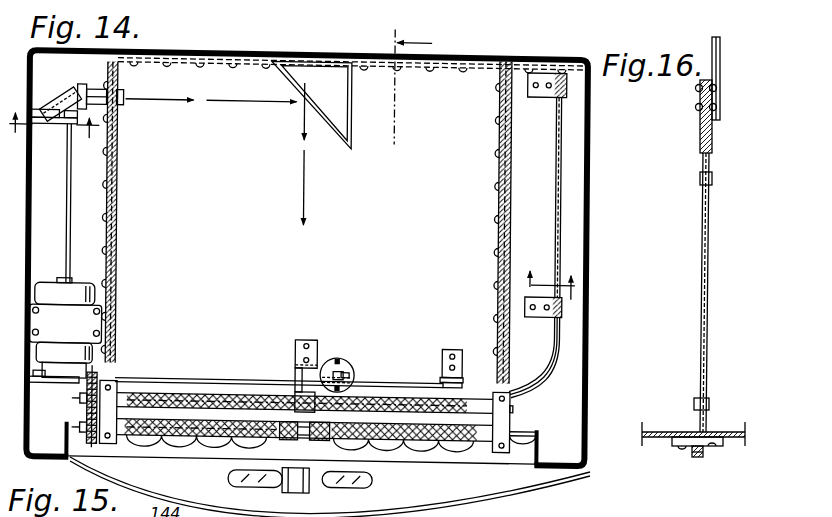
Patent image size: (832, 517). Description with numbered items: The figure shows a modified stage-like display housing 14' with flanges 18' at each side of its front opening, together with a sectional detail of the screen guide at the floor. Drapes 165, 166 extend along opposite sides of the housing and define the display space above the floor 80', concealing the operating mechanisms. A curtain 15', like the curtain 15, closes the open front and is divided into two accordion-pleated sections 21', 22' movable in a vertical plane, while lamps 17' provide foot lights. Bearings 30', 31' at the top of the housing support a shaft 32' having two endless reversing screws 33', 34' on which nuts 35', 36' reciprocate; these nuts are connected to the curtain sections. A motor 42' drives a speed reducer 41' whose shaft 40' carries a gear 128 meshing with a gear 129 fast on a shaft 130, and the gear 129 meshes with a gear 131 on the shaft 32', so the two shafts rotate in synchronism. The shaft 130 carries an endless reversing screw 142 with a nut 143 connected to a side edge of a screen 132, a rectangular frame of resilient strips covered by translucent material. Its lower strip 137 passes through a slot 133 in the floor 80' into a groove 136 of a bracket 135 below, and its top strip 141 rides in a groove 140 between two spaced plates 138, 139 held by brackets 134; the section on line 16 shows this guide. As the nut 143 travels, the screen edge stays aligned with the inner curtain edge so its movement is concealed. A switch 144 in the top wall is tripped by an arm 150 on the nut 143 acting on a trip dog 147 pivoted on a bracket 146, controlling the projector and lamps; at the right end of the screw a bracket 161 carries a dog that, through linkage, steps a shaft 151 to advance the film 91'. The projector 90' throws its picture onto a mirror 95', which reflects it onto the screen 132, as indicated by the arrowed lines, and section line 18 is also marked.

In FIG. 14, the housing 14' is at (327, 258).
In FIG. 14, the flanges 18' is at (300, 443).
In FIG. 14, the drape 165 is at (118, 232).
In FIG. 14, the drape 166 is at (500, 183).
In FIG. 14, the mirror 95' is at (294, 105).
In FIG. 14, the curtain 15 is at (424, 88).
In FIG. 14, the floor 80' is at (360, 244).
In FIG. 16, the floor 80' is at (686, 448).
In FIG. 14, the projector 90' is at (55, 91).
In FIG. 14, the film 91' is at (89, 85).
In FIG. 14, the section line 18 is at (53, 136).
In FIG. 14, the shaft 151 is at (68, 202).
In FIG. 14, the motor 42' is at (65, 310).
In FIG. 14, the speed reducer 41' is at (52, 393).
In FIG. 14, the gear 128 is at (99, 373).
In FIG. 14, the shaft 40' is at (116, 384).
In FIG. 14, the gear 129 is at (88, 404).
In FIG. 14, the gear 131 is at (94, 442).
In FIG. 14, the bearing 31' is at (124, 397).
In FIG. 14, the shaft 130 is at (135, 397).
In FIG. 14, the endless reversing screw 142 is at (406, 391).
In FIG. 14, the endless reversing screw 33' is at (326, 444).
In FIG. 14, the curtain section 22' is at (330, 458).
In FIG. 14, the endless reversing screw 34' is at (201, 455).
In FIG. 14, the nut 36' is at (265, 442).
In FIG. 14, the nut 35' is at (306, 442).
In FIG. 14, the curtain section 21' is at (407, 468).
In FIG. 14, the curtain 15' is at (437, 471).
In FIG. 14, the shaft 32' is at (463, 468).
In FIG. 14, the lamps 17' is at (300, 490).
In FIG. 14, the bracket 146 is at (298, 338).
In FIG. 14, the arm 150 is at (300, 372).
In FIG. 14, the nut 143 is at (302, 395).
In FIG. 14, the switch 144 is at (340, 354).
In FIG. 14, the trip dog 147 is at (355, 362).
In FIG. 14, the bracket 161 is at (455, 342).
In FIG. 14, the bearing 30' is at (523, 422).
In FIG. 14, the brackets 134 is at (542, 88).
In FIG. 16, the brackets 134 is at (720, 62).
In FIG. 14, the groove 140 is at (557, 205).
In FIG. 16, the groove 140 is at (701, 118).
In FIG. 14, the plate 139 is at (556, 173).
In FIG. 16, the plate 139 is at (703, 137).
In FIG. 14, the plate 138 is at (557, 176).
In FIG. 16, the plate 138 is at (712, 128).
In FIG. 14, the screen 132 is at (562, 268).
In FIG. 16, the screen 132 is at (710, 216).
In FIG. 14, the section line 16 is at (549, 291).
In FIG. 16, the top strip 141 is at (703, 157).
In FIG. 16, the lower strip 137 is at (697, 425).
In FIG. 16, the slot 133 is at (703, 437).
In FIG. 16, the bracket 135 is at (705, 450).
In FIG. 16, the groove 136 is at (698, 460).